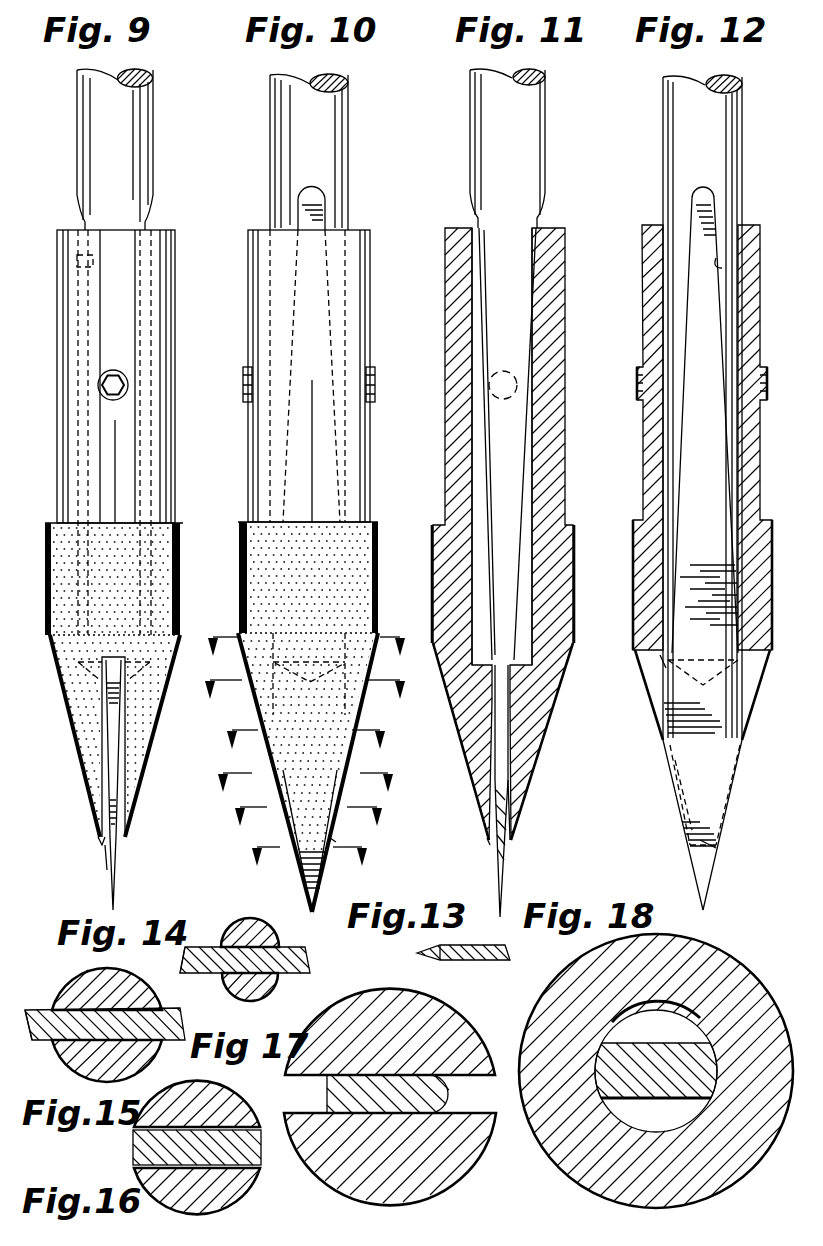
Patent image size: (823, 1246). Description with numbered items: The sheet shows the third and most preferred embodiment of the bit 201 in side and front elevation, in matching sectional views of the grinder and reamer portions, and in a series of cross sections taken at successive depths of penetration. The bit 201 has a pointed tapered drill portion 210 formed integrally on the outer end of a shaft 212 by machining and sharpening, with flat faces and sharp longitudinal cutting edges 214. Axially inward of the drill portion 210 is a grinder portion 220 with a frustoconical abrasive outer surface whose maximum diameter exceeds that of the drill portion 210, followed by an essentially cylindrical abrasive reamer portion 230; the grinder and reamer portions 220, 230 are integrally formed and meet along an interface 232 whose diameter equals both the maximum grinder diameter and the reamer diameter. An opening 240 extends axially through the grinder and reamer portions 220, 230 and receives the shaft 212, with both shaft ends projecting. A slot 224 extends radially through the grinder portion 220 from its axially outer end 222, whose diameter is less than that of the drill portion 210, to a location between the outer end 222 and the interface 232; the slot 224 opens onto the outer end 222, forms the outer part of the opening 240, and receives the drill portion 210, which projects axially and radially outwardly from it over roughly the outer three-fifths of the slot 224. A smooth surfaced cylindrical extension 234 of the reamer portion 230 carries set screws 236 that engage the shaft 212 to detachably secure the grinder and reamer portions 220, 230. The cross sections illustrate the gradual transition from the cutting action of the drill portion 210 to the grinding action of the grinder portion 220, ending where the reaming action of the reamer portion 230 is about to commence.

In FIG. 9, the bit 201 is at (60, 130).
In FIG. 10, the bit 201 is at (238, 136).
In FIG. 11, the bit 201 is at (442, 129).
In FIG. 12, the bit 201 is at (637, 156).
In FIG. 9, the drill portion 210 is at (113, 720).
In FIG. 10, the drill portion 210 is at (305, 893).
In FIG. 11, the drill portion 210 is at (503, 777).
In FIG. 12, the drill portion 210 is at (693, 767).
In FIG. 13, the drill portion 210 is at (478, 960).
In FIG. 14, the drill portion 210 is at (298, 960).
In FIG. 15, the drill portion 210 is at (50, 1008).
In FIG. 16, the drill portion 210 is at (137, 1147).
In FIG. 17, the drill portion 210 is at (450, 1097).
In FIG. 18, the drill portion 210 is at (672, 1055).
In FIG. 9, the shaft 212 is at (128, 195).
In FIG. 10, the shaft 212 is at (320, 184).
In FIG. 11, the shaft 212 is at (520, 172).
In FIG. 12, the shaft 212 is at (717, 172).
In FIG. 12, the longitudinal cutting edges 214 is at (673, 795).
In FIG. 13, the longitudinal cutting edges 214 is at (420, 953).
In FIG. 14, the longitudinal cutting edges 214 is at (178, 958).
In FIG. 15, the longitudinal cutting edges 214 is at (25, 1008).
In FIG. 9, the grinder portion 220 is at (60, 677).
In FIG. 10, the grinder portion 220 is at (375, 627).
In FIG. 11, the grinder portion 220 is at (548, 692).
In FIG. 12, the grinder portion 220 is at (747, 726).
In FIG. 14, the grinder portion 220 is at (233, 923).
In FIG. 15, the grinder portion 220 is at (122, 968).
In FIG. 16, the grinder portion 220 is at (168, 1088).
In FIG. 17, the grinder portion 220 is at (468, 1018).
In FIG. 18, the grinder portion 220 is at (750, 975).
In FIG. 9, the axially outer end 222 is at (97, 845).
In FIG. 10, the axially outer end 222 is at (335, 840).
In FIG. 11, the axially outer end 222 is at (488, 843).
In FIG. 12, the axially outer end 222 is at (716, 845).
In FIG. 9, the slot 224 is at (103, 857).
In FIG. 11, the slot 224 is at (510, 840).
In FIG. 12, the slot 224 is at (662, 662).
In FIG. 14, the slot 224 is at (280, 943).
In FIG. 15, the slot 224 is at (55, 1042).
In FIG. 16, the slot 224 is at (258, 1166).
In FIG. 17, the slot 224 is at (327, 1093).
In FIG. 9, the reamer portion 230 is at (183, 527).
In FIG. 10, the reamer portion 230 is at (378, 527).
In FIG. 11, the reamer portion 230 is at (573, 530).
In FIG. 12, the reamer portion 230 is at (772, 530).
In FIG. 9, the interface 232 is at (47, 593).
In FIG. 10, the interface 232 is at (260, 636).
In FIG. 11, the interface 232 is at (575, 625).
In FIG. 12, the interface 232 is at (746, 740).
In FIG. 9, the cylindrical extension 234 is at (57, 253).
In FIG. 10, the cylindrical extension 234 is at (252, 243).
In FIG. 11, the cylindrical extension 234 is at (445, 283).
In FIG. 12, the cylindrical extension 234 is at (642, 296).
In FIG. 9, the set screws 236 is at (128, 383).
In FIG. 10, the set screws 236 is at (375, 372).
In FIG. 11, the set screws 236 is at (518, 378).
In FIG. 12, the set screws 236 is at (765, 367).
In FIG. 9, the opening 240 is at (77, 262).
In FIG. 10, the opening 240 is at (352, 260).
In FIG. 11, the opening 240 is at (537, 230).
In FIG. 12, the opening 240 is at (720, 265).
In FIG. 18, the opening 240 is at (670, 1118).